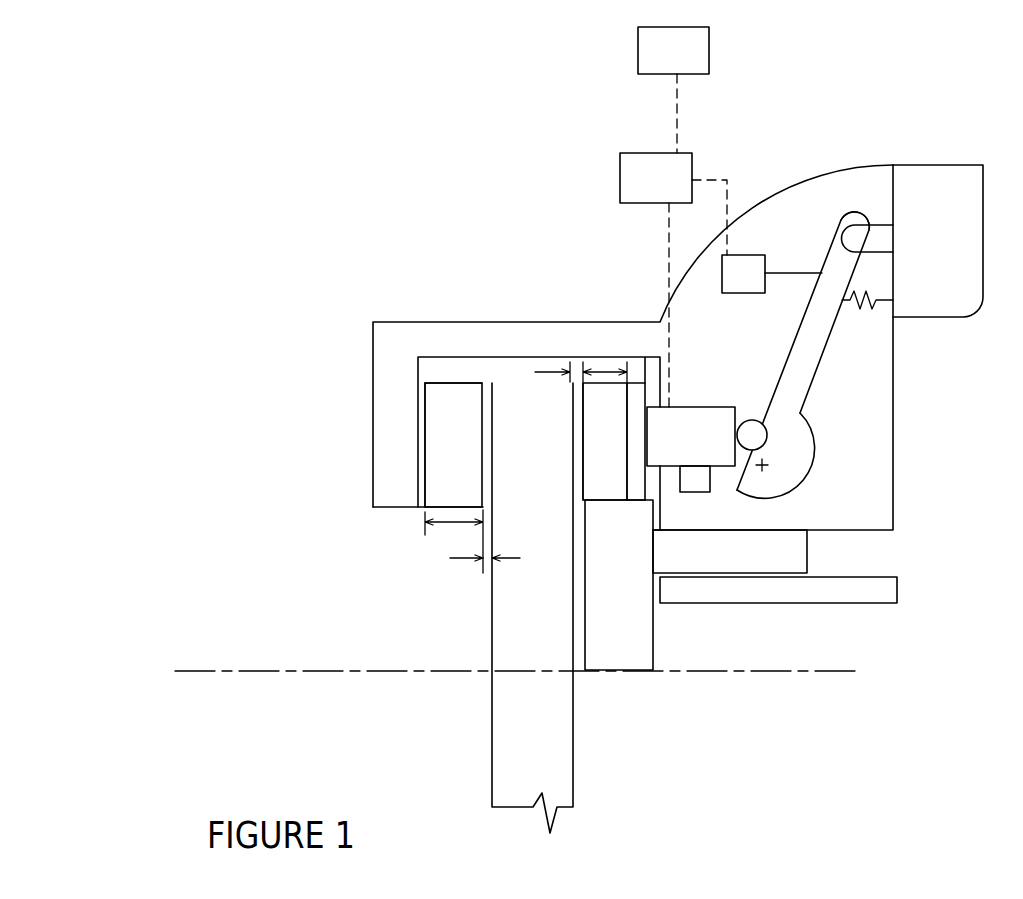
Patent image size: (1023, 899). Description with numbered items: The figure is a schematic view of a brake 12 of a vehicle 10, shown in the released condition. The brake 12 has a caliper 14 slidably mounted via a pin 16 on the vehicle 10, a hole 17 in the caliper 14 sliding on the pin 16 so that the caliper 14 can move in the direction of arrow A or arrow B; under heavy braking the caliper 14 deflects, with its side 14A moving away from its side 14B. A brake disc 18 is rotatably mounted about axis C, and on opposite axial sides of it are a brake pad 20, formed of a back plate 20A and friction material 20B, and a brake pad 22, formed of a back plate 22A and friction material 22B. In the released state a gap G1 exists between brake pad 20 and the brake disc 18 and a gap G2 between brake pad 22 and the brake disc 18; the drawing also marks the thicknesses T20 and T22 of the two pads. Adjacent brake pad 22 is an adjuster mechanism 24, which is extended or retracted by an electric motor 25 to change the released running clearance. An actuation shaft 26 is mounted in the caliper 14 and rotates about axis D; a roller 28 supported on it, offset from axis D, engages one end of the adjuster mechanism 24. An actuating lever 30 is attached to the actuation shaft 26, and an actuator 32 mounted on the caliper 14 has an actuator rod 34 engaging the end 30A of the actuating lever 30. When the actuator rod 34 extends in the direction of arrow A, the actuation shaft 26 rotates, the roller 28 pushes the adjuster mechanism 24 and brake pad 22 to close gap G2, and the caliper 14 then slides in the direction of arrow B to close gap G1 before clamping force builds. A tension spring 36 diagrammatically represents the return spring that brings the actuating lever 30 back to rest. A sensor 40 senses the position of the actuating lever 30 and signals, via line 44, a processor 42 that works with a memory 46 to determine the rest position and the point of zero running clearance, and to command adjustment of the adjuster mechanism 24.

The vehicle 10 is at (605, 598).
The brake 12 is at (291, 571).
The caliper 14 is at (439, 335).
The side of caliper 14A is at (385, 426).
The side of caliper 14B is at (882, 493).
The pin 16 is at (726, 563).
The hole 17 is at (870, 530).
The brake disc 18 is at (563, 760).
The brake pad 20 is at (439, 458).
The brake pad back plate 20A is at (420, 402).
The friction material 20B is at (437, 400).
The brake pad 22 is at (591, 458).
The brake pad back plate 22A is at (637, 483).
The friction material 22B is at (608, 410).
The adjuster mechanism 24 is at (677, 450).
The electric motor 25 is at (697, 482).
The actuation shaft 26 is at (790, 435).
The roller 28 is at (753, 420).
The actuating lever 30 is at (825, 267).
The end of actuating lever 30A is at (850, 217).
The actuator 32 is at (931, 208).
The actuator rod 34 is at (867, 242).
The tension spring 36 is at (870, 308).
The sensor 40 is at (729, 287).
The processor 42 is at (642, 191).
The line 44 is at (712, 180).
The memory 46 is at (659, 63).
The arrow A is at (378, 198).
The arrow B is at (447, 198).
The axis C is at (340, 673).
The axis D is at (772, 462).
The gap G1 is at (457, 560).
The gap G2 is at (545, 362).
The thickness of first magnet T20 is at (460, 525).
The thickness of second magnet T22 is at (605, 362).